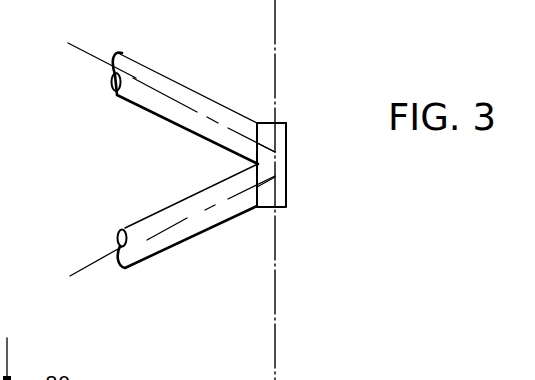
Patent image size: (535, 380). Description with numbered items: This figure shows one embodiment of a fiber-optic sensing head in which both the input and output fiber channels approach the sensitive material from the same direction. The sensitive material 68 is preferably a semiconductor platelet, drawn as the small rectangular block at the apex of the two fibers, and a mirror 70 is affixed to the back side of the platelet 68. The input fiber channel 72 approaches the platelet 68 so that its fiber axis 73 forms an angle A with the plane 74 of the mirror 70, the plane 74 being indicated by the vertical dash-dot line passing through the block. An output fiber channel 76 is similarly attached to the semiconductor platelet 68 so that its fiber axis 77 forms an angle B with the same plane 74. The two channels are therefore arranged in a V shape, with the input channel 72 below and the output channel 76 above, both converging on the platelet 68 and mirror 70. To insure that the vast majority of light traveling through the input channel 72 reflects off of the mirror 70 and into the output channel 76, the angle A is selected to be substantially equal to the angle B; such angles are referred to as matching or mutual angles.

The sensitive material 68 is at (263, 122).
The mirror 70 is at (286, 168).
The input fiber channel 72 is at (152, 217).
The fiber axis 73 is at (88, 265).
The plane of the mirror 74 is at (275, 312).
The output fiber channel 76 is at (148, 108).
The fiber axis 77 is at (87, 51).
The angle A is at (266, 290).
The angle B is at (266, 55).